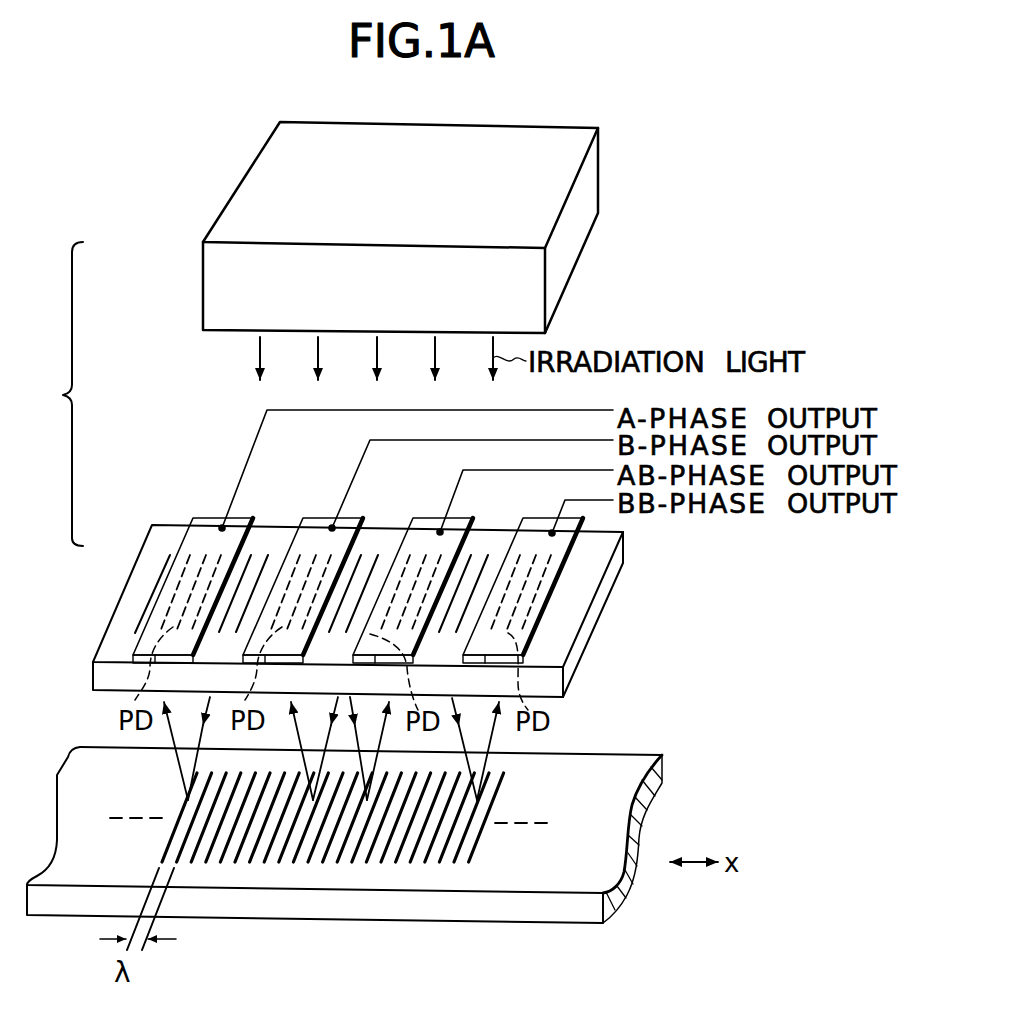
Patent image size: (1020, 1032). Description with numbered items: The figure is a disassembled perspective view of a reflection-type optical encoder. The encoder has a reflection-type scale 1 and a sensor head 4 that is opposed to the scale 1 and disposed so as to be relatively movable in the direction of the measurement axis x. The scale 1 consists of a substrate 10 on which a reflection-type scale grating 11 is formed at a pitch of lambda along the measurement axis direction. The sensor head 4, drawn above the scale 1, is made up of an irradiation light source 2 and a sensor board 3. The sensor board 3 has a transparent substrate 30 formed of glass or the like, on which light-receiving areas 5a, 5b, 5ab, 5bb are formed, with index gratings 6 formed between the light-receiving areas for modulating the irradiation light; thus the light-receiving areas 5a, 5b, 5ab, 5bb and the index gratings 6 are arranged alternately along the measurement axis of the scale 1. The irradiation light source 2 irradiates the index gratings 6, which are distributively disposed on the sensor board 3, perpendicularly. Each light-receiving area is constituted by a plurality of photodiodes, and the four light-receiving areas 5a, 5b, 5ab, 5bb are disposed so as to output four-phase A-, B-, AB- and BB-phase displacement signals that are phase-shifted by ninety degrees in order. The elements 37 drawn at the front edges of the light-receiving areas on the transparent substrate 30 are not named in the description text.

The scale 1 is at (344, 876).
The irradiation light source 2 is at (212, 291).
The sensor board 3 is at (366, 580).
The sensor head 4 is at (62, 394).
The light-receiving area 5a is at (198, 553).
The light-receiving area 5b is at (310, 553).
The light-receiving area 5ab is at (420, 556).
The light-receiving area 5bb is at (532, 556).
The index grating 6 is at (268, 555).
The substrate 10 is at (573, 914).
The scale grating 11 is at (471, 853).
The transparent substrate 30 is at (603, 607).
The electrode 37 is at (135, 656).